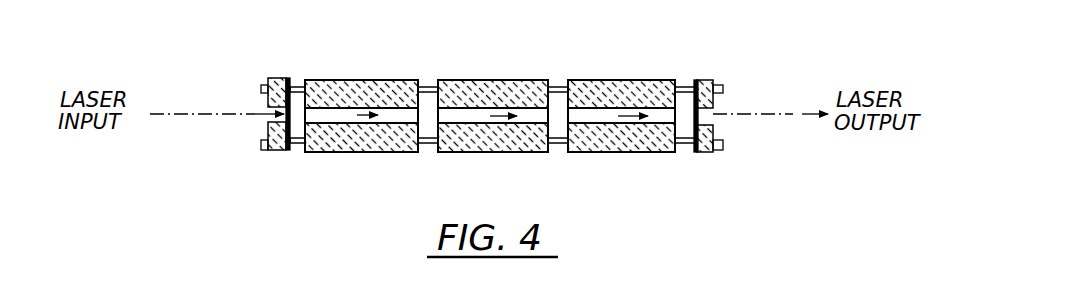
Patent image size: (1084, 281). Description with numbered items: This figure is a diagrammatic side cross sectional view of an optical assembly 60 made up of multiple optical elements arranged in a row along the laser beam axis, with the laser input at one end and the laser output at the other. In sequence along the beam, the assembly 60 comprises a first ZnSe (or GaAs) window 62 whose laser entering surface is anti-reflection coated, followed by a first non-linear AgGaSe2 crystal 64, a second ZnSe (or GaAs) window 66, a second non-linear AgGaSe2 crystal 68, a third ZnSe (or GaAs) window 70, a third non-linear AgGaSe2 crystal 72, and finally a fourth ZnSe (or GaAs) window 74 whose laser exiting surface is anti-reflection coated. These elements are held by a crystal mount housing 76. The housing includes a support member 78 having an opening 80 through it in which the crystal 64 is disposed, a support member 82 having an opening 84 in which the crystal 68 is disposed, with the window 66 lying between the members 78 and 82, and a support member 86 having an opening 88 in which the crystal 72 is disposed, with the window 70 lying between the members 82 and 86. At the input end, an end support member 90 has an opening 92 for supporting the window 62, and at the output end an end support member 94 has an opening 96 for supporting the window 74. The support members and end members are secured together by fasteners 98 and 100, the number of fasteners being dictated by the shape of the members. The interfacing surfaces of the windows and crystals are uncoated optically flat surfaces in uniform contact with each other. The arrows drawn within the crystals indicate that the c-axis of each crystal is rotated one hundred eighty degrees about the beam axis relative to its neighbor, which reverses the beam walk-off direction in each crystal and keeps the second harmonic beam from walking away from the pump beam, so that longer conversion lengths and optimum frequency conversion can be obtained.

The optical assembly 60 is at (492, 98).
The first ZnSe window 62 is at (295, 100).
The first non-linear AgGaSe2 crystal 64 is at (338, 112).
The second ZnSe window 66 is at (430, 82).
The second non-linear AgGaSe2 crystal 68 is at (470, 116).
The third ZnSe window 70 is at (552, 84).
The third non-linear AgGaSe2 crystal 72 is at (607, 117).
The fourth ZnSe window 74 is at (690, 126).
The crystal mount housing 76 is at (673, 79).
The support member 78 is at (316, 79).
The opening 80 is at (327, 125).
The support member 82 is at (447, 80).
The opening 84 is at (448, 126).
The support member 86 is at (576, 82).
The opening 88 is at (590, 125).
The end support member 90 is at (280, 78).
The opening 92 is at (268, 116).
The end support member 94 is at (707, 82).
The opening 96 is at (716, 116).
The fastener 98 is at (261, 87).
The fastener 100 is at (261, 146).